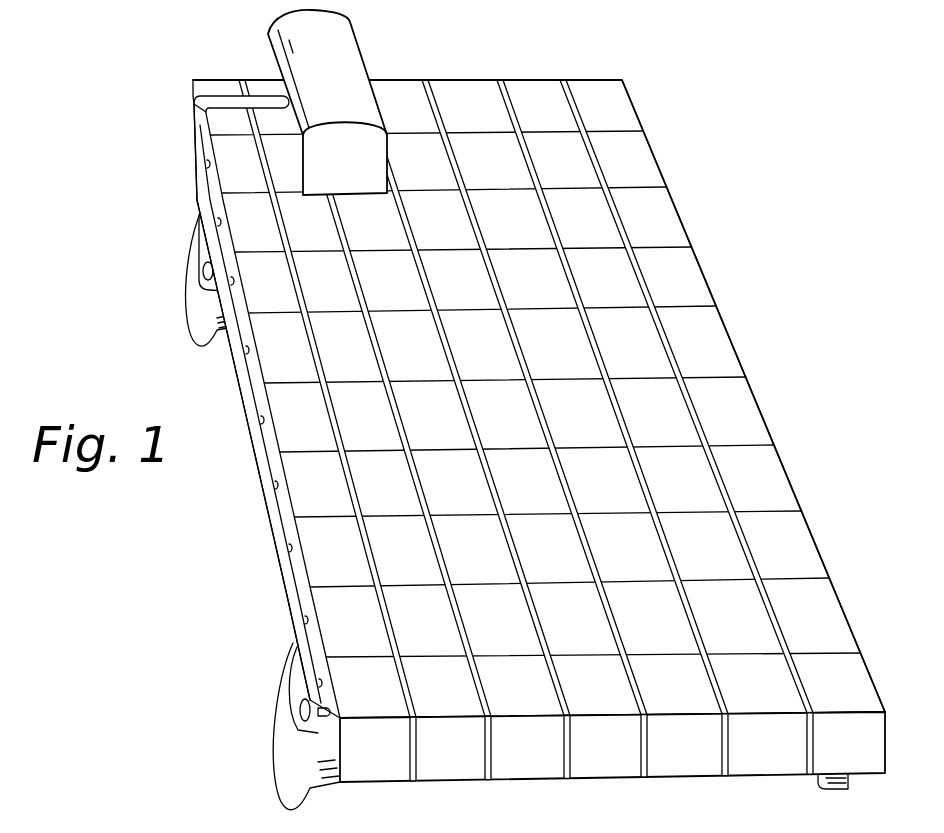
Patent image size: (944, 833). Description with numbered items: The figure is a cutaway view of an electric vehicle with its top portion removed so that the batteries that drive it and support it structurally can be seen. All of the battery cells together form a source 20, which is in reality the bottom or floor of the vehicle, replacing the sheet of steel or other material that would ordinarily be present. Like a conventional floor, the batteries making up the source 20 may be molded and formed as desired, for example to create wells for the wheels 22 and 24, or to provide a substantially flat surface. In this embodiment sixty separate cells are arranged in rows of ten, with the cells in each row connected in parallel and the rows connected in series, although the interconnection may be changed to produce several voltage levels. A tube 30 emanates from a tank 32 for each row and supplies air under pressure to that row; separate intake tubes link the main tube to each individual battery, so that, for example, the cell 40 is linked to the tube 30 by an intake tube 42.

The source 20 is at (728, 254).
The wheel 22 is at (283, 713).
The wheel 24 is at (193, 290).
The tube 30 is at (190, 120).
The tank 32 is at (352, 52).
The cell 40 is at (387, 767).
The intake tube 42 is at (327, 660).